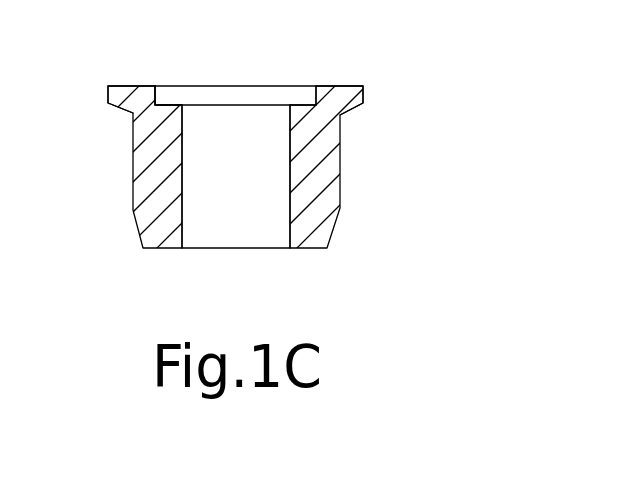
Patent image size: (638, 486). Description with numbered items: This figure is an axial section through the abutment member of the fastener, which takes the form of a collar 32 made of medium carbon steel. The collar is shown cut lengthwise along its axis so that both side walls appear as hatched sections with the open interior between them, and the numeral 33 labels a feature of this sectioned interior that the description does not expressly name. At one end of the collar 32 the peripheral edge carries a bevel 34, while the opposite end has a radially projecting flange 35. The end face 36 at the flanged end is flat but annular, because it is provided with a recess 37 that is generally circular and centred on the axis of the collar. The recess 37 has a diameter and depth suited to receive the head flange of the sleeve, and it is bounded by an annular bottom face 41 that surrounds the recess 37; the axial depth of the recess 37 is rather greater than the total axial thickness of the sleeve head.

The collar 32 is at (126, 184).
The interior cavity of cap 33 is at (210, 215).
The bevel 34 is at (335, 230).
The radially projecting flange 35 is at (121, 107).
The end face 36 is at (347, 85).
The recess 37 is at (280, 95).
The annular bottom face 41 is at (171, 106).